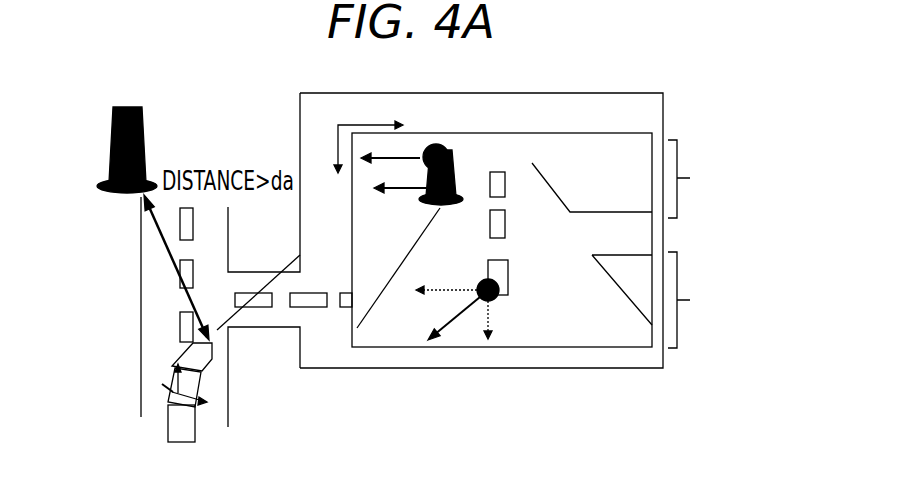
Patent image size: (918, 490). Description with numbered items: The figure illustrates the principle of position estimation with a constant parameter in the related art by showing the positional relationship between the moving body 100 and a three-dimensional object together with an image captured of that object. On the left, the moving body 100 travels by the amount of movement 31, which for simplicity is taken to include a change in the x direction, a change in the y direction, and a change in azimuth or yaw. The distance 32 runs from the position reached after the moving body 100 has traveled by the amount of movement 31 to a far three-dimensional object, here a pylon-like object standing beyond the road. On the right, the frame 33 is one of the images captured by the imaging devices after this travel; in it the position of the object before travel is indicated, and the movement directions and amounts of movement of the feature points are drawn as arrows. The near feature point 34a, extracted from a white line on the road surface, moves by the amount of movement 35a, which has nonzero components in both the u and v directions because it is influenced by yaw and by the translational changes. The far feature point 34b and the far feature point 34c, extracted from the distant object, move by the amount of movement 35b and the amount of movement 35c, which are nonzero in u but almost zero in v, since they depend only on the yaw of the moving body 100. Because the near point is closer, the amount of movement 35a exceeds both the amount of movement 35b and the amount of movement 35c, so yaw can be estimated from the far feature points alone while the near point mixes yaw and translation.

The moving body 100 is at (167, 420).
The amount of movement 31 is at (212, 392).
The distance 32 is at (141, 222).
The frame 33 is at (596, 130).
The near feature point 34a is at (500, 288).
The far feature point 34b is at (446, 146).
The far feature point 34c is at (455, 205).
The amount of movement 35a is at (456, 333).
The amount of movement 35b is at (370, 166).
The amount of movement 35c is at (400, 192).